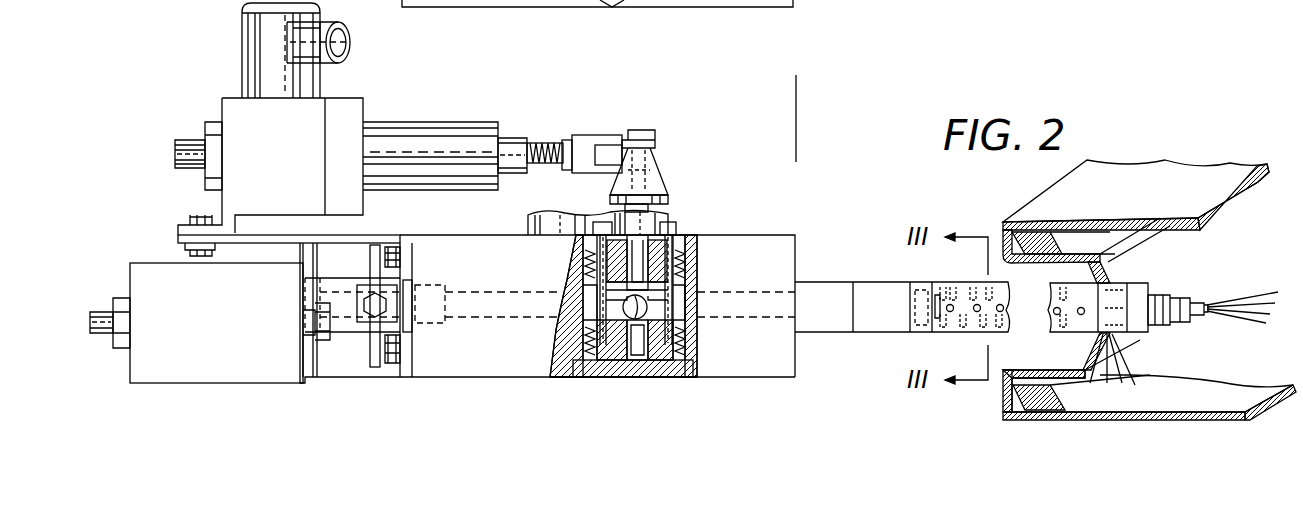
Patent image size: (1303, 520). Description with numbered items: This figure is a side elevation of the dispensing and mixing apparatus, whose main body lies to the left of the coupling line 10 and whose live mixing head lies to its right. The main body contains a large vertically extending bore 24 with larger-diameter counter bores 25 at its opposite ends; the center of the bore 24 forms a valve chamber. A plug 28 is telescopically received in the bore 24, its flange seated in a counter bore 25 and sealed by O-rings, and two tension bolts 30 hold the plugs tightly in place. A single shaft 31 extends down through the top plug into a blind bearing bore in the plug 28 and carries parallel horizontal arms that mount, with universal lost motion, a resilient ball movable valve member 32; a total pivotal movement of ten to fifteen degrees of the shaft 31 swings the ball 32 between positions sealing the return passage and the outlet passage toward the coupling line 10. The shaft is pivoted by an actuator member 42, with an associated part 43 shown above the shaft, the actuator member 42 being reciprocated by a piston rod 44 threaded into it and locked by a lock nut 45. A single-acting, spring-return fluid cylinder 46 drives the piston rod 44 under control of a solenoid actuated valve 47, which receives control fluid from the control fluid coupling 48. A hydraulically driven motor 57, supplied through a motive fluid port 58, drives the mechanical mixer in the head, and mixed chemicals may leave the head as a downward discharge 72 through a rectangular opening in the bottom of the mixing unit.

The coupling line 10 is at (797, 118).
The vertically extending bore 24 is at (690, 332).
The counter bores 25 is at (700, 240).
The plug 28 is at (640, 366).
The tension bolts 30 is at (600, 224).
The shaft 31 is at (645, 200).
The ball movable valve member 32 is at (672, 296).
The actuator member 42 is at (597, 142).
The actuator cam 43 is at (640, 131).
The piston rod 44 is at (543, 150).
The lock nut 45 is at (567, 143).
The fluid cylinder 46 is at (425, 131).
The solenoid actuated valve 47 is at (253, 52).
The control fluid coupling 48 is at (185, 140).
The motor 57 is at (240, 333).
The motive fluid port 58 is at (103, 332).
The downward discharge 72 is at (1128, 358).